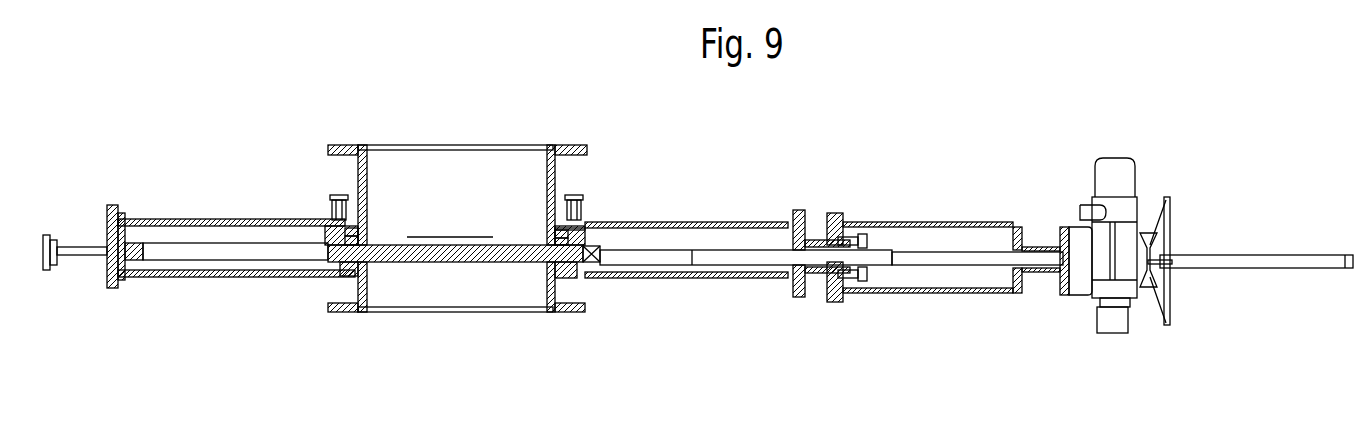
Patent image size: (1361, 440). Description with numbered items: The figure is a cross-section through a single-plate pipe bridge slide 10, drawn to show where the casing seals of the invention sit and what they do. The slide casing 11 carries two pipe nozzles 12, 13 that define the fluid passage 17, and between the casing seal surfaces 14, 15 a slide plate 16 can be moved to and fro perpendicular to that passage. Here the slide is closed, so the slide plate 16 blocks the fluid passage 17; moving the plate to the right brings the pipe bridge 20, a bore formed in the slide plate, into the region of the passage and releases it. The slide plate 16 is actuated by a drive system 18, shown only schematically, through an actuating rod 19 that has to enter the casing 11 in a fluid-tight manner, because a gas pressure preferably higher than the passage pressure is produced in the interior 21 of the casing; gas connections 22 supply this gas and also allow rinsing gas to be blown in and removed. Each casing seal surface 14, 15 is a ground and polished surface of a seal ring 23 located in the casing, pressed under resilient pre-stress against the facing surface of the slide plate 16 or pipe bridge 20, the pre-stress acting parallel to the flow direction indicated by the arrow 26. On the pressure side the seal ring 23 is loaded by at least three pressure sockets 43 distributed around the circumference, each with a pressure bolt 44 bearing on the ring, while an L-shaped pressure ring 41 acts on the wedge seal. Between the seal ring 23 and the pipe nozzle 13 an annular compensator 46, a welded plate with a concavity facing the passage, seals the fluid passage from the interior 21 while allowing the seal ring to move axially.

The single-plate pipe bridge slide 10 is at (155, 322).
The slide casing 11 is at (238, 278).
The pipe nozzle 12 is at (550, 312).
The pipe nozzle 13 is at (548, 165).
The casing seal surface 14 is at (547, 267).
The casing seal surface 15 is at (602, 244).
The slide plate 16 is at (442, 262).
The fluid passage 17 is at (441, 180).
The drive system 18 is at (1140, 172).
The actuating rod 19 is at (746, 265).
The pipe bridge 20 is at (150, 243).
The interior of the slide casing 21 is at (212, 232).
The gas connection 22 is at (82, 262).
The seal ring 23 is at (330, 222).
The arrow 26 is at (447, 230).
The pressure ring 41 is at (365, 272).
The pressure socket 43 is at (323, 193).
The pressure bolt 44 is at (367, 228).
The annular compensator 46 is at (367, 241).